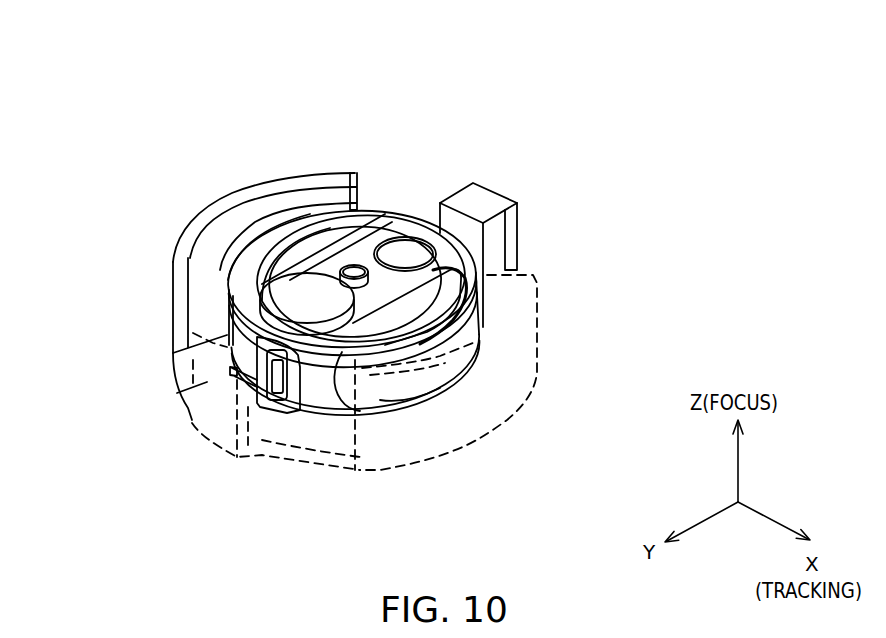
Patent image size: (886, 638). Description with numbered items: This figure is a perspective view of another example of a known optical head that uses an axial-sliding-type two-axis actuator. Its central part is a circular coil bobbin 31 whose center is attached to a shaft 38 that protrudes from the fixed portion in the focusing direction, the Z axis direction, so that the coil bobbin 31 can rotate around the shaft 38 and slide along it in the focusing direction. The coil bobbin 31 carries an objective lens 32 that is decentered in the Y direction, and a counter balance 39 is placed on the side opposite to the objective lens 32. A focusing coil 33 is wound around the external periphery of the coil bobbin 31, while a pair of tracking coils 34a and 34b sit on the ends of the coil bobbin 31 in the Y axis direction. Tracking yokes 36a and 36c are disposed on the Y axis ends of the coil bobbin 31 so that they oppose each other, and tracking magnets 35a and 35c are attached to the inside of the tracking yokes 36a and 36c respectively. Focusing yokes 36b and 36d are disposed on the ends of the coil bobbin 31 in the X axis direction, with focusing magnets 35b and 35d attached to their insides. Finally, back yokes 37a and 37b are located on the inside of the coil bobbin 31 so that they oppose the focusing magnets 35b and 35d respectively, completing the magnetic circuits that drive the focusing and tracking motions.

The coil bobbin 31 is at (478, 313).
The objective lens 32 is at (275, 257).
The focusing coil 33 is at (397, 383).
The tracking coil 34a is at (250, 418).
The tracking coil 34b is at (440, 224).
The tracking magnet 35a is at (430, 212).
The focusing magnet 35b is at (497, 305).
The tracking magnet 35c is at (262, 333).
The focusing magnet 35d is at (253, 208).
The tracking yoke 36a is at (505, 200).
The focusing yoke 36b is at (470, 417).
The tracking yoke 36c is at (172, 397).
The focusing yoke 36d is at (208, 200).
The back yoke 37a is at (338, 365).
The back yoke 37b is at (307, 243).
The shaft 38 is at (355, 266).
The counter balance 39 is at (425, 233).